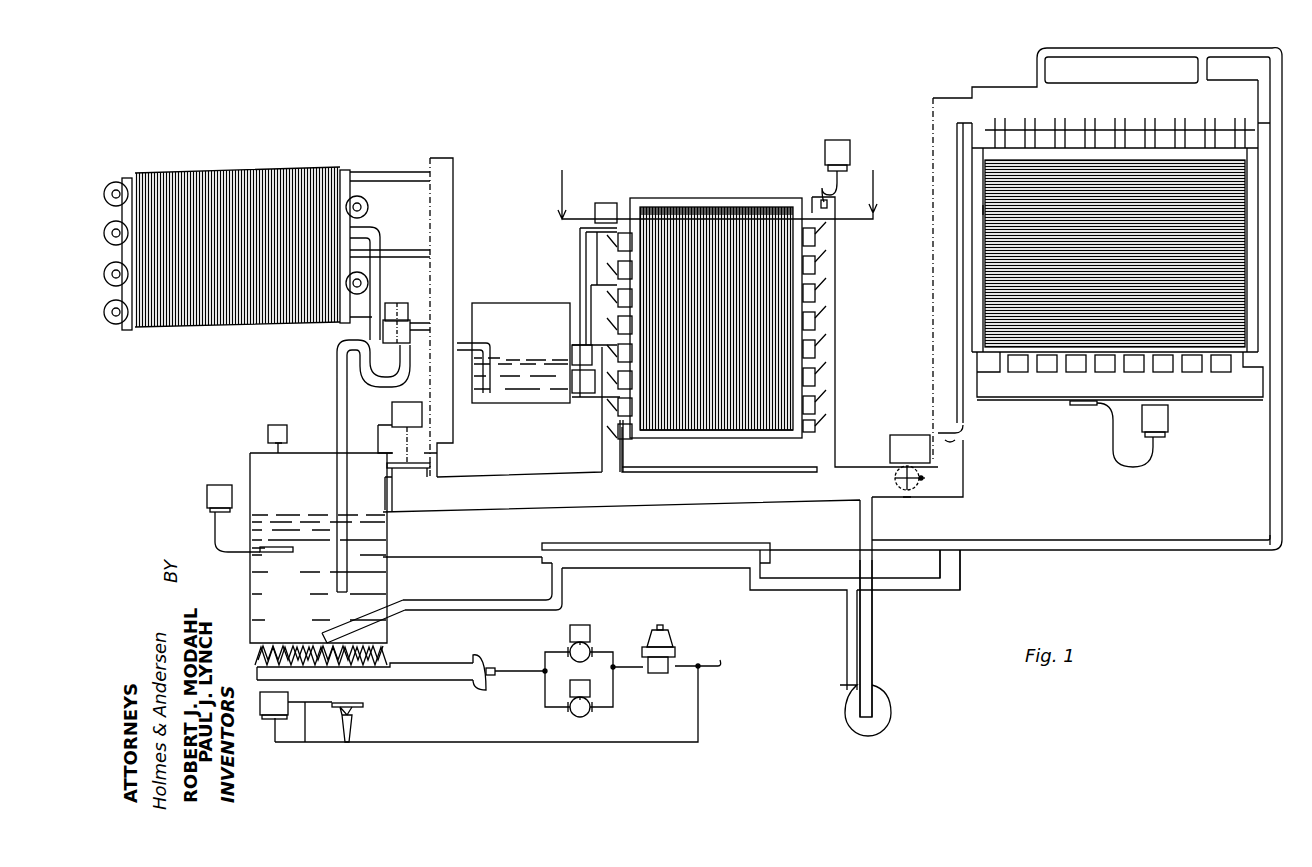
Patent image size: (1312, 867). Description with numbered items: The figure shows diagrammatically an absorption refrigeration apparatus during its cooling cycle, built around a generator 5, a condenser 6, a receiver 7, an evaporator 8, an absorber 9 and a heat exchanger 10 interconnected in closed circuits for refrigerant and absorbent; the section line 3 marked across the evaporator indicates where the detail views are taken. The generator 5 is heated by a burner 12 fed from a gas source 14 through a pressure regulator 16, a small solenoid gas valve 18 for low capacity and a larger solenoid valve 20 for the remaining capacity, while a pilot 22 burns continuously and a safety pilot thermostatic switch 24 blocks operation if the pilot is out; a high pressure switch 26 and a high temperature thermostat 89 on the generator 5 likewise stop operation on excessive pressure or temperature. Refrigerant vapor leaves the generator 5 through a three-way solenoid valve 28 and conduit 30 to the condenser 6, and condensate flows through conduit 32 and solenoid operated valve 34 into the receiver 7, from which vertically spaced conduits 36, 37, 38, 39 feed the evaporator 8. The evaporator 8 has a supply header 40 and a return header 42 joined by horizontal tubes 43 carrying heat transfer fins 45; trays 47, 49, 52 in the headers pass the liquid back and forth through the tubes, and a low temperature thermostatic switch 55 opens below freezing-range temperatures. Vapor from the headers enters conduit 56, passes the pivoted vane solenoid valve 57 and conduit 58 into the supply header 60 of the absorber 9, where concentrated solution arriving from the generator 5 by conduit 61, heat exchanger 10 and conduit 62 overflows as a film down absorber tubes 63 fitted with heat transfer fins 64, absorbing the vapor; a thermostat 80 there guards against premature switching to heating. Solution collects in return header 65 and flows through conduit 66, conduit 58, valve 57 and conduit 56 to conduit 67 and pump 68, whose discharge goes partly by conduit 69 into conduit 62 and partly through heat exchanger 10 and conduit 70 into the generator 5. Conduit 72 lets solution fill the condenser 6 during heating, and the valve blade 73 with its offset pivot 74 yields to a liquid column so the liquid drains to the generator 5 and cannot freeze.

The section line 3- 3 is at (721, 194).
The generator 5 is at (387, 540).
The condenser 6 is at (210, 248).
The receiver 7 is at (500, 303).
The evaporator 8 is at (720, 326).
The absorber 9 is at (1112, 248).
The heat exchanger 10 is at (622, 547).
The burner 12 is at (435, 682).
The gas source 14 is at (715, 660).
The pressure regulator 16 is at (664, 634).
The solenoid gas valve 18 is at (588, 645).
The solenoid valve 20 is at (590, 712).
The pilot 22 is at (355, 730).
The safety pilot thermostatic switch 24 is at (288, 700).
The high pressure switch 26 is at (268, 428).
The three-way solenoid valve 28 is at (378, 431).
The conduit 30 is at (453, 218).
The conduit 32 is at (380, 290).
The solenoid operated valve 34 is at (417, 304).
The conduit 36 is at (580, 400).
The conduit 37 is at (584, 381).
The conduit 38 is at (593, 352).
The conduit 39 is at (580, 278).
The supply header 40 is at (600, 452).
The return header 42 is at (816, 443).
The horizontal tubes 43 is at (818, 260).
The heat transfer fins 45 is at (727, 428).
The tray 47 is at (822, 222).
The tray 49 is at (606, 228).
The lower tray 52 is at (605, 260).
The low temperature thermostatic switch 55 is at (850, 146).
The conduit 56 is at (770, 503).
The solenoid valve 57 is at (918, 435).
The conduit 58 is at (933, 315).
The supply header 60 is at (998, 87).
The conduit 61 is at (518, 553).
The conduit 62 is at (1118, 540).
The absorber tubes 63 is at (995, 138).
The heat transfer fins 64 is at (1000, 218).
The return header 65 is at (1250, 397).
The conduit 66 is at (980, 436).
The conduit 67 is at (860, 518).
The pump 68 is at (895, 712).
The conduit 69 is at (958, 563).
The conduit 70 is at (500, 610).
The conduit 72 is at (337, 415).
The blade 73 is at (907, 497).
The pivot 74 is at (921, 478).
The thermostat 80 is at (1168, 422).
The high temperature thermostat 89 is at (222, 485).